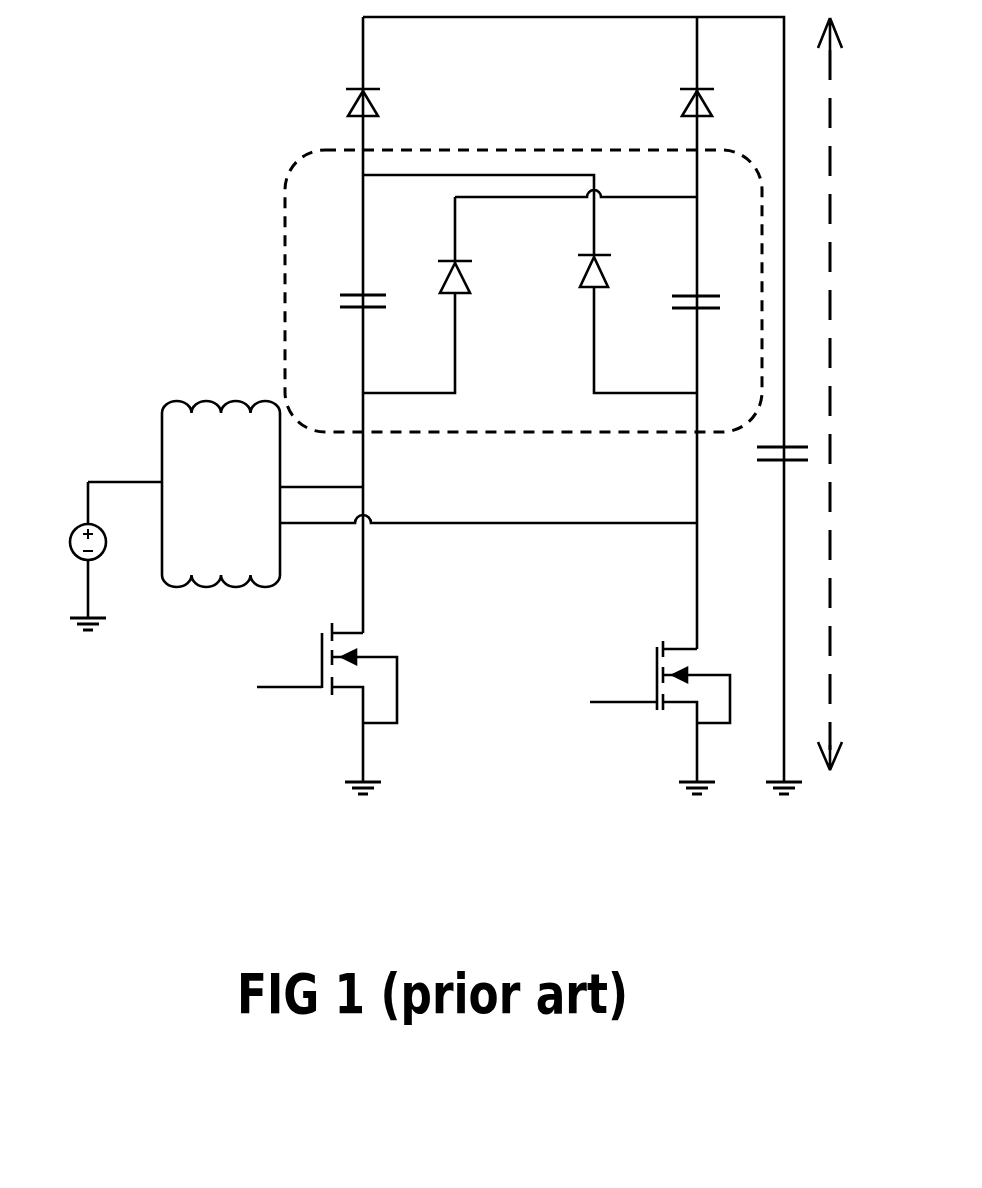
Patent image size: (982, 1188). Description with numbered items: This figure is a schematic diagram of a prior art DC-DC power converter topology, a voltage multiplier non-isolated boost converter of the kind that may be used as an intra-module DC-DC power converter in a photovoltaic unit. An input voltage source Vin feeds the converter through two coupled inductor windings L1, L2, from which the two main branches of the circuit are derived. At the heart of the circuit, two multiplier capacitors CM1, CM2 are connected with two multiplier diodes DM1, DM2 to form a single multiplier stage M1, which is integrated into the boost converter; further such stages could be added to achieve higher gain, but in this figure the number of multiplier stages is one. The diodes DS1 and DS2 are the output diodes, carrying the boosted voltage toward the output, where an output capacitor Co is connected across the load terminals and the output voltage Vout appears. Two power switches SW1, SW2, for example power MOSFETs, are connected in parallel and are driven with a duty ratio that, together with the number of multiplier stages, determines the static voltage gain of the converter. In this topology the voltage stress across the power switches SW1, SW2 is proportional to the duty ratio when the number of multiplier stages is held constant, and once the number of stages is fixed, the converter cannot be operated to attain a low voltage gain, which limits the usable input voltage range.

The output diode DS1 is at (390, 103).
The output diode DS2 is at (724, 103).
The multiplier stage M1 is at (285, 233).
The multiplier capacitor CM1 is at (338, 317).
The multiplier capacitor CM2 is at (711, 317).
The multiplier diode DM1 is at (484, 277).
The multiplier diode DM2 is at (624, 271).
The first inductor L1 is at (221, 433).
The second inductor L2 is at (221, 555).
The input voltage source Vin is at (88, 556).
The power switch SW1 is at (355, 708).
The power switch SW2 is at (654, 717).
The output capacitor Co is at (792, 440).
The output voltage Vout is at (827, 394).